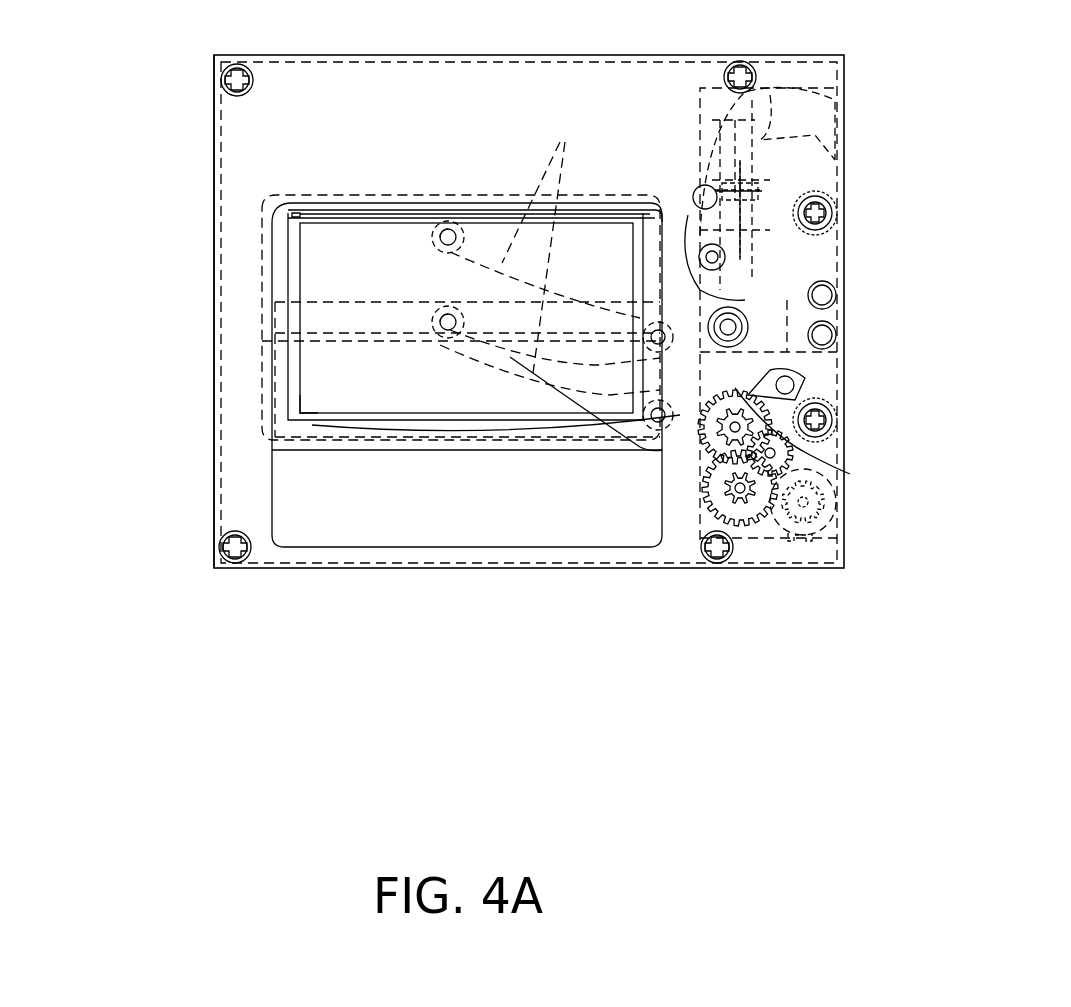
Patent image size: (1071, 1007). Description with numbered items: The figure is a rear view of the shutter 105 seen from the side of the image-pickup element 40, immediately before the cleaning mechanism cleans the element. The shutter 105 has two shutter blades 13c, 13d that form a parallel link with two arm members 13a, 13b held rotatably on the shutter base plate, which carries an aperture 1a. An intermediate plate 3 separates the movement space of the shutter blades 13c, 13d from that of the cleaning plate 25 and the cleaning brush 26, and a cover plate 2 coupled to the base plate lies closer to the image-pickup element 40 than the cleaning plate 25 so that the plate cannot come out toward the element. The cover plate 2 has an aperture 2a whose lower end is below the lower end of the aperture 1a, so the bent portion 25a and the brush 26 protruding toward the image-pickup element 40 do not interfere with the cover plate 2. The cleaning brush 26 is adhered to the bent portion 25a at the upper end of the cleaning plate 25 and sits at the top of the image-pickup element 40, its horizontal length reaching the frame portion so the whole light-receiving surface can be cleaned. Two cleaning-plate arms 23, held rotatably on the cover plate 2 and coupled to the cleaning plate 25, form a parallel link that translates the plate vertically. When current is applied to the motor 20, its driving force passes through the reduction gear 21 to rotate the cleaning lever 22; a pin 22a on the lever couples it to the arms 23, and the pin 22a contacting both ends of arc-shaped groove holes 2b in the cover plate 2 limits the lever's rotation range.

The cover plate 2 is at (214, 57).
The aperture 2a is at (575, 545).
The arc-shaped groove holes 2b is at (814, 438).
The intermediate plate 3 is at (219, 160).
The aperture 1a is at (302, 404).
The arm member 13a is at (735, 215).
The arm member 13b is at (748, 318).
The shutter blade 13c is at (262, 273).
The shutter blade 13d is at (262, 385).
The motor 20 is at (837, 513).
The reduction gear 21 is at (762, 508).
The cleaning lever 22 is at (818, 385).
The pin 22a is at (778, 395).
The cleaning-plate arms 23 is at (536, 241).
The cleaning plate 25 is at (280, 228).
The bent portion 25a is at (392, 212).
The cleaning brush 26 is at (372, 218).
The image-pickup element 40 is at (300, 402).
The shutter mechanism 105 is at (280, 603).